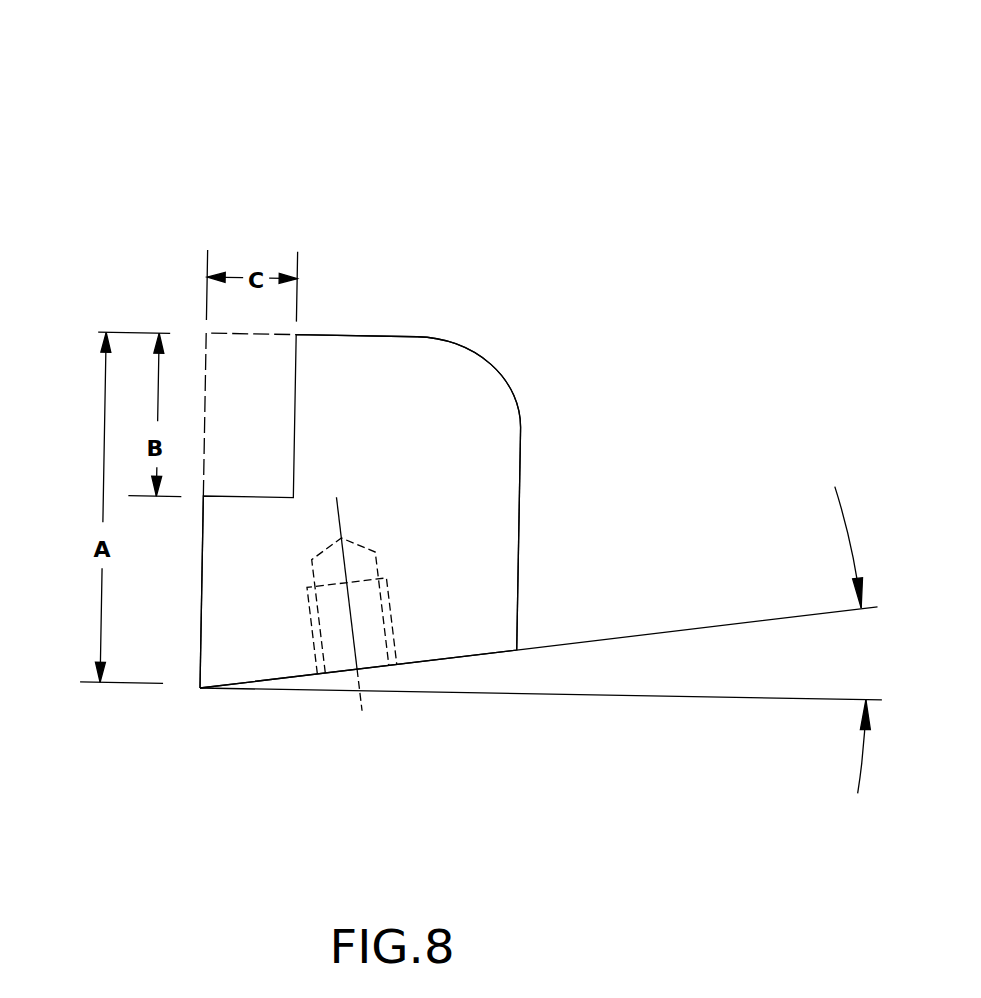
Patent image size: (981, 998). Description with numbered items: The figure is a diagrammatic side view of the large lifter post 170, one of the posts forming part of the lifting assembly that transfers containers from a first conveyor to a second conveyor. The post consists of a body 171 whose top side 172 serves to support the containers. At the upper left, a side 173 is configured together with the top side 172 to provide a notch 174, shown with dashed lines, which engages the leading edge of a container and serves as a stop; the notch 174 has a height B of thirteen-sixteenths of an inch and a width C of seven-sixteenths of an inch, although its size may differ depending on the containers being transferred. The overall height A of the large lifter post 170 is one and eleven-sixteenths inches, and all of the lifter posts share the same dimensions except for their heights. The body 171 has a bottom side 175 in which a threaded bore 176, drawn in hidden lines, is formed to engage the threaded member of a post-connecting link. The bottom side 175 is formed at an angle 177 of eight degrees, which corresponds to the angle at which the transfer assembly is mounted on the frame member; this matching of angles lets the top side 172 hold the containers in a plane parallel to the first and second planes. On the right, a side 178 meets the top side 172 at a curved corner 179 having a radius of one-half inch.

The large lifter post 170 is at (198, 163).
The body 171 is at (380, 497).
The top side 172 is at (372, 333).
The side 173 is at (200, 593).
The notch 174 is at (248, 425).
The bottom side 175 is at (455, 658).
The threaded bore 176 is at (357, 668).
The angle 177 is at (542, 635).
The side 178 is at (518, 558).
The curved corner 179 is at (490, 367).